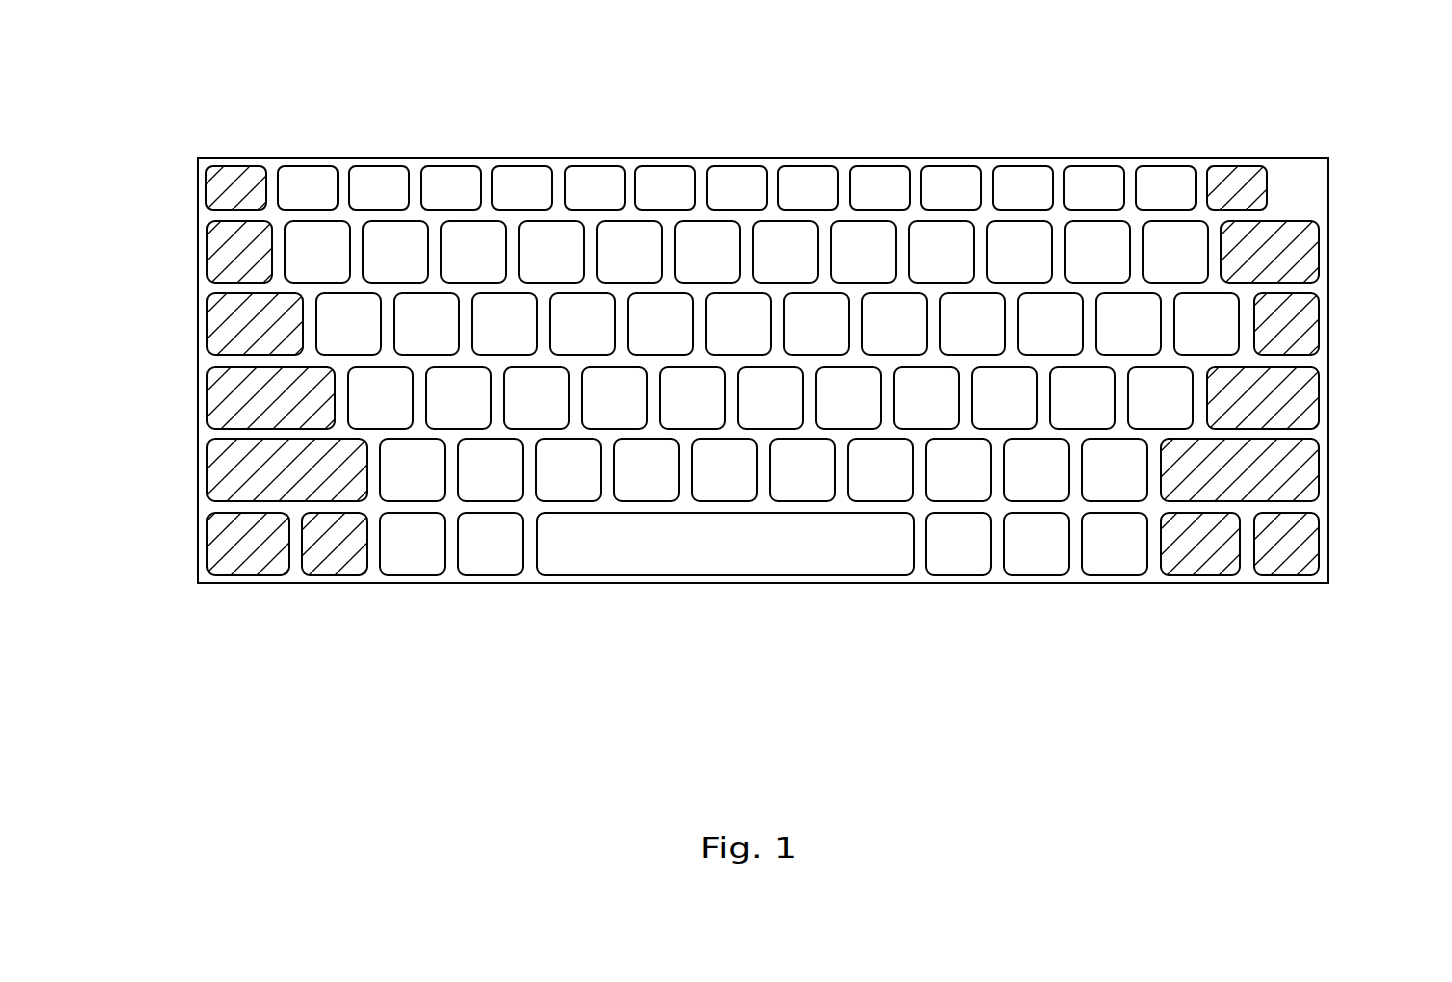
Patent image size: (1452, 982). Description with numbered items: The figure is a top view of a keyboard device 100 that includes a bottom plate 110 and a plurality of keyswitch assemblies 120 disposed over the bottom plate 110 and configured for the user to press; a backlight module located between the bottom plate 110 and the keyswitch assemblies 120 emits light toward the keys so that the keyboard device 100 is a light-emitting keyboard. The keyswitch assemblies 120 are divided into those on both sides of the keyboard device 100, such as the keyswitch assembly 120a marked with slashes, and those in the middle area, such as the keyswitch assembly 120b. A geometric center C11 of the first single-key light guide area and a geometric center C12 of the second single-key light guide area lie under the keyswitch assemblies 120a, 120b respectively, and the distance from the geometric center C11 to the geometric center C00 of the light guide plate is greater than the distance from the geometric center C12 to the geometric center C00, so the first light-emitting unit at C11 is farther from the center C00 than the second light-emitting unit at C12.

The keyboard device 100 is at (112, 35).
The bottom plate 110 is at (1328, 286).
The keyswitch assemblies 120 is at (595, 158).
The keyswitch assembly 120a is at (198, 247).
The keyswitch assembly 120b is at (346, 207).
The geometric center of the first single-key light guide area C11 is at (239, 252).
The geometric center of the second single-key light guide area C12 is at (317, 252).
The geometric center of the light guide plate C00 is at (772, 367).